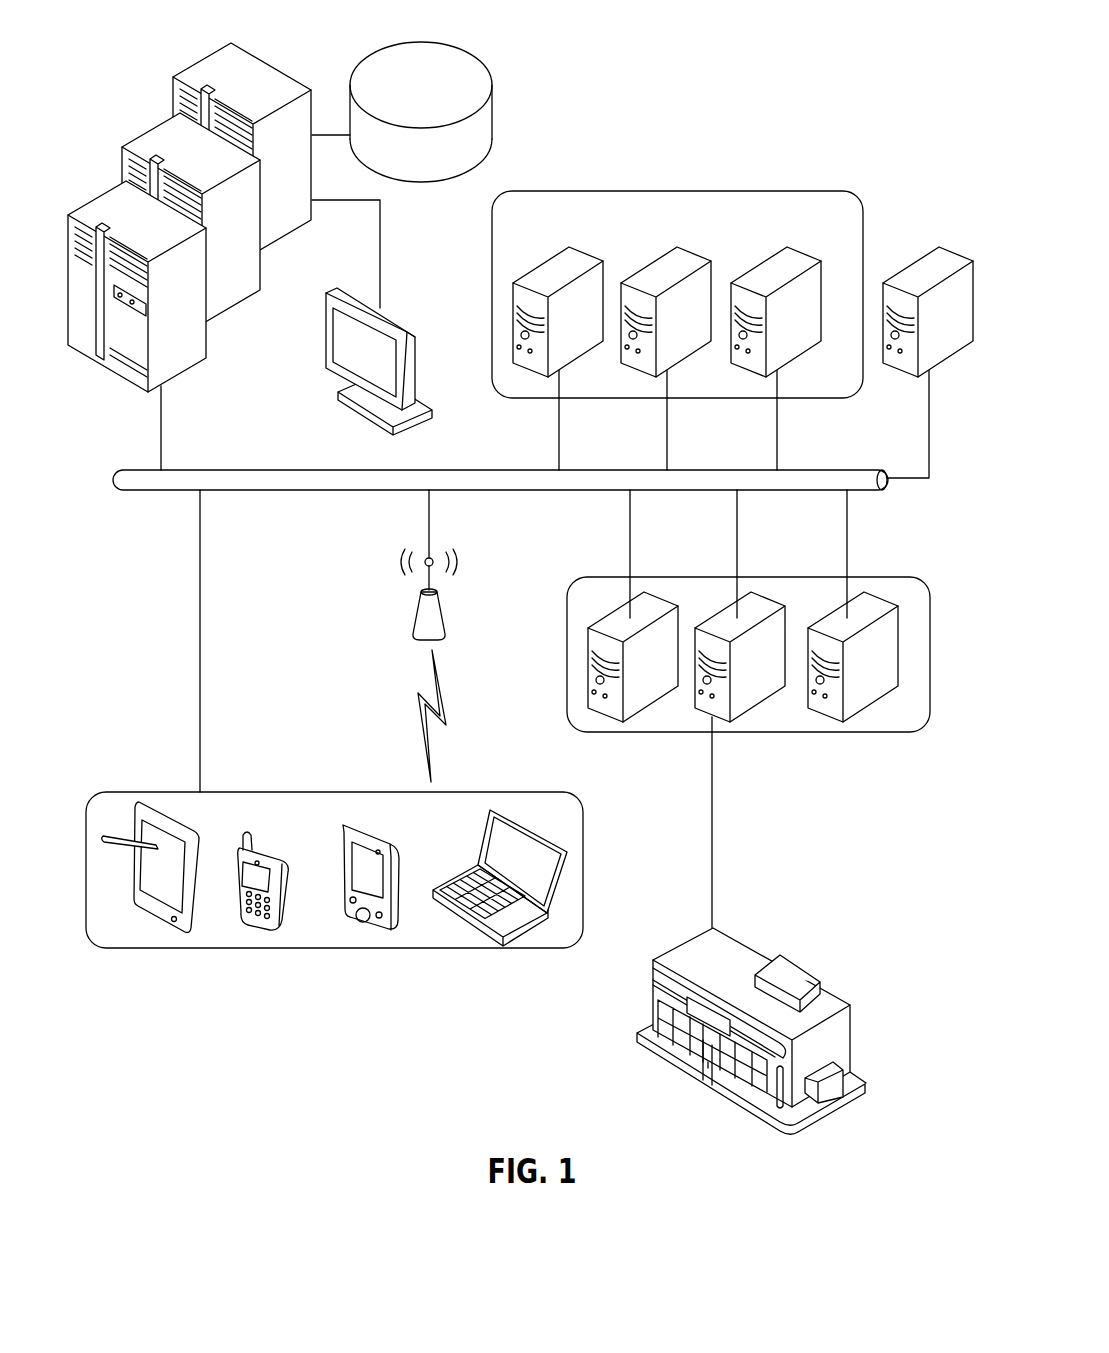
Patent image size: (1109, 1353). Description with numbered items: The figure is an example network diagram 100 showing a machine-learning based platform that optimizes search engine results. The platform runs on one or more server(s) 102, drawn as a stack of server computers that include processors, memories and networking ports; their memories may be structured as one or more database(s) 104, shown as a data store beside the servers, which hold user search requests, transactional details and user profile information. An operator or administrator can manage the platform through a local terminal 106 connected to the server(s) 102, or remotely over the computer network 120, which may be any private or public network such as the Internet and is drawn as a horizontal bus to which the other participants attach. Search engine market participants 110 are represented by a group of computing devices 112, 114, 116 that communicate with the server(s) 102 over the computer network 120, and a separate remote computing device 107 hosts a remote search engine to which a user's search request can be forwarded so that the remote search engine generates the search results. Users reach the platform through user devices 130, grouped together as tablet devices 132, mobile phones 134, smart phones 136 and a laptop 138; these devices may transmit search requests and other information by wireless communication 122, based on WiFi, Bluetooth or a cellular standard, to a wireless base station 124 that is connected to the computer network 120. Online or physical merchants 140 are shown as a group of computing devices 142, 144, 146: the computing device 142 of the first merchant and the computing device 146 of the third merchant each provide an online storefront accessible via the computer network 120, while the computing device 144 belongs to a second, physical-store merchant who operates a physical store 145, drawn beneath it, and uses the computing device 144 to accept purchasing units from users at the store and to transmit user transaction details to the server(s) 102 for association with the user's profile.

The network diagram 100 is at (658, 5).
The server(s) 102 is at (296, 70).
The database(s) 104 is at (470, 55).
The local terminal 106 is at (407, 325).
The remote computing device 107 is at (953, 255).
The search engine market participants 110 is at (765, 190).
The computing device of search engine market participant 112 is at (590, 255).
The computing device of search engine market participant 114 is at (698, 255).
The computing device of search engine market participant 116 is at (805, 255).
The computer network 120 is at (285, 468).
The wireless communication 122 is at (443, 692).
The wireless base station 124 is at (442, 613).
The user devices 130 is at (283, 792).
The tablet devices 132 is at (190, 933).
The mobile phones 134 is at (270, 932).
The smart phones 136 is at (383, 932).
The laptop 138 is at (477, 930).
The online or physical merchants 140 is at (900, 575).
The computing device of the first merchant 142 is at (639, 712).
The computing device of the second merchant 144 is at (750, 713).
The computing device of the third merchant 146 is at (857, 712).
The physical store 145 is at (737, 957).